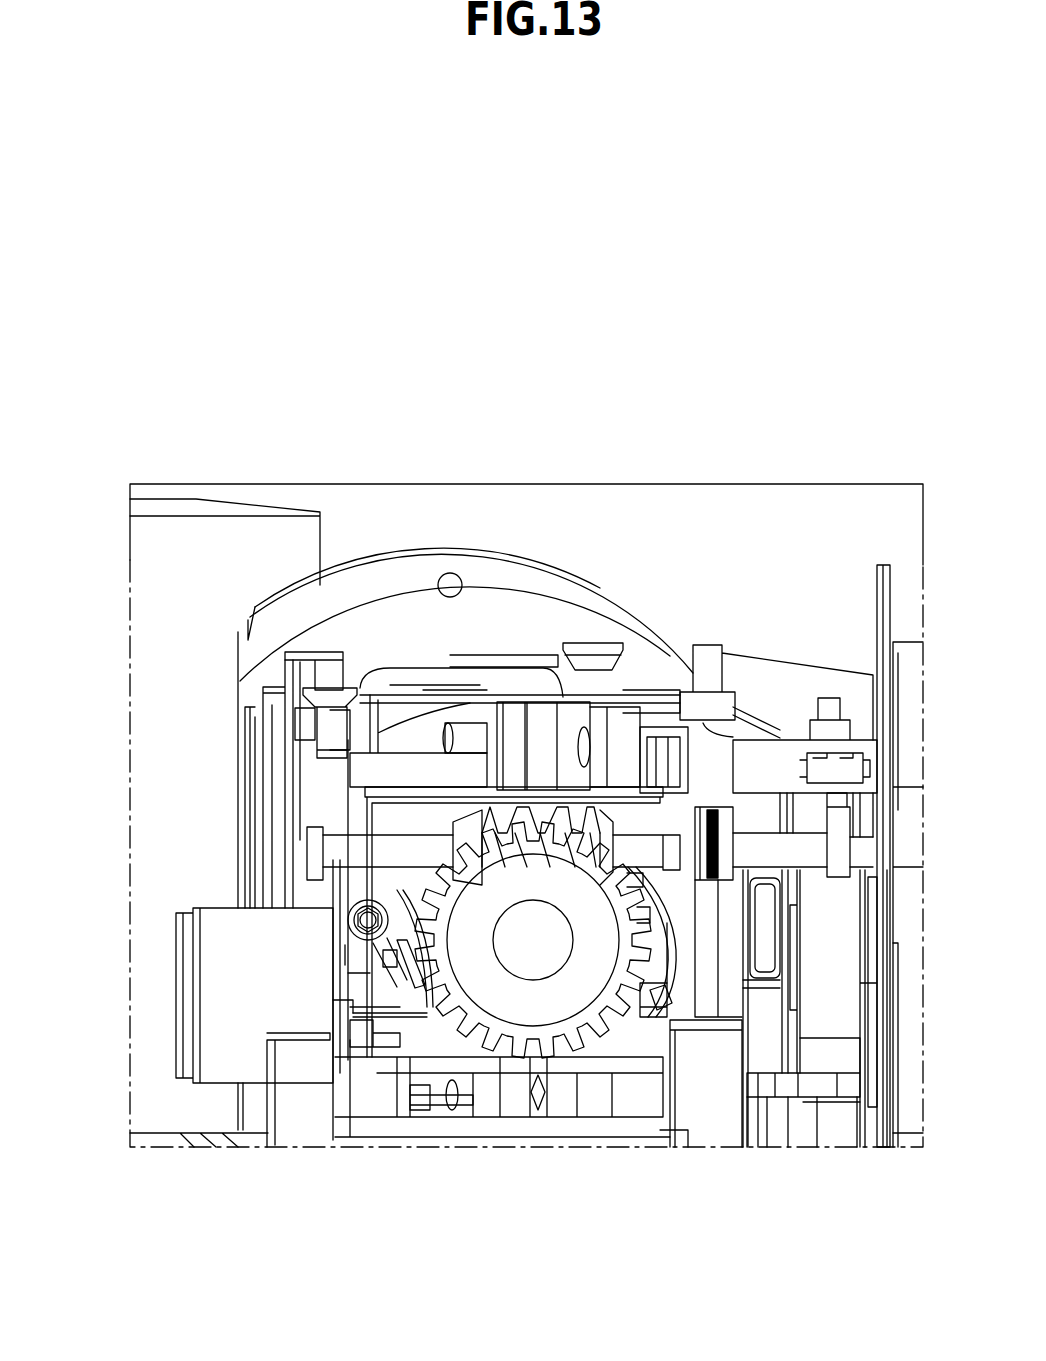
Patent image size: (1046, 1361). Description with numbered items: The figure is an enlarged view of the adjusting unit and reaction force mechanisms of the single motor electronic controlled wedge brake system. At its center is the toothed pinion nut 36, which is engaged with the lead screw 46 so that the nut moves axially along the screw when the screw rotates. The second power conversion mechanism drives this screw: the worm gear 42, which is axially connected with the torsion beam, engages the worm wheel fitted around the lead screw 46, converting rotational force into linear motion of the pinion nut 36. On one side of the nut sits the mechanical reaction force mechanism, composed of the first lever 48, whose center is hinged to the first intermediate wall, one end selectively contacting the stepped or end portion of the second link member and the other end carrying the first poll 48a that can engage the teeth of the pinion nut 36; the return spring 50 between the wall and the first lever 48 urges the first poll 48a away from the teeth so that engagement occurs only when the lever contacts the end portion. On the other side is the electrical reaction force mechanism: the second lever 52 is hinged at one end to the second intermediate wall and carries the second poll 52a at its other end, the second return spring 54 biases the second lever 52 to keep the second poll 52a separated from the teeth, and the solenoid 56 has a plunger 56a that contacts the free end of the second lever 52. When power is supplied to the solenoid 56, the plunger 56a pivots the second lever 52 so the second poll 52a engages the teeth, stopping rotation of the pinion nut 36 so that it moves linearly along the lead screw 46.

The pinion nut 36 is at (533, 1066).
The worm gear 42 is at (543, 810).
The lead screw 46 is at (518, 962).
The first lever 48 is at (680, 1059).
The first poll 48a is at (657, 1025).
The return spring 50 is at (722, 945).
The second lever 52 is at (348, 1064).
The second poll 52a is at (393, 1030).
The second return spring 54 is at (365, 947).
The solenoid 56 is at (205, 1076).
The plunger 56a is at (347, 1010).